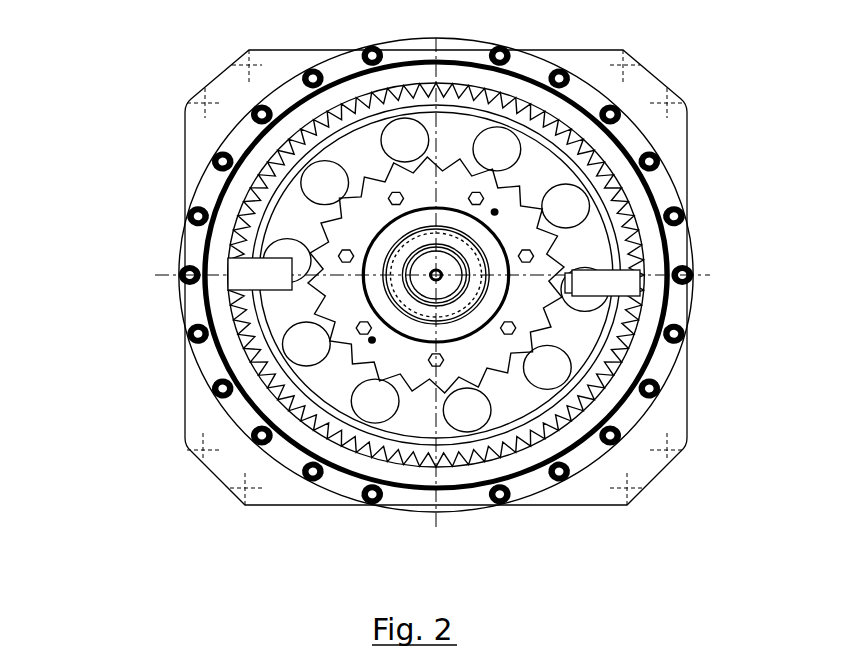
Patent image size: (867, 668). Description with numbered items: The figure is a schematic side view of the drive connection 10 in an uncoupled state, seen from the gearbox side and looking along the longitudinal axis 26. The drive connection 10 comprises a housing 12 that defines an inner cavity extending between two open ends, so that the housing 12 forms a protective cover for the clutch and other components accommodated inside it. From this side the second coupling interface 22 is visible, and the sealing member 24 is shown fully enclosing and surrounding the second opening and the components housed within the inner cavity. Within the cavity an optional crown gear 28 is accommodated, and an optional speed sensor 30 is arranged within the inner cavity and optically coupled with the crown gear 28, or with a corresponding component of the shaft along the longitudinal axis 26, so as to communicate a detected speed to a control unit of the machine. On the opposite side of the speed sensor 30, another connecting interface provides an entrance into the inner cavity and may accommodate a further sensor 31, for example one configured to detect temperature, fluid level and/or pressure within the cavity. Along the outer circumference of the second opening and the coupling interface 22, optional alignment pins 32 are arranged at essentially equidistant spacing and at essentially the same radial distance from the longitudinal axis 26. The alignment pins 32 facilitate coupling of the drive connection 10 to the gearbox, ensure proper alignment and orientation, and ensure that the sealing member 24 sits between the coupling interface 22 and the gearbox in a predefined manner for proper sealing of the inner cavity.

The drive connection 10 is at (93, 73).
The housing 12 is at (168, 143).
The second coupling interface 22 is at (693, 306).
The sealing member 24 is at (207, 353).
The longitudinal axis 26 is at (448, 275).
The crown gear 28 is at (578, 347).
The speed sensor 30 is at (647, 277).
The sensor 31 is at (228, 262).
The alignment pins 32 is at (248, 442).